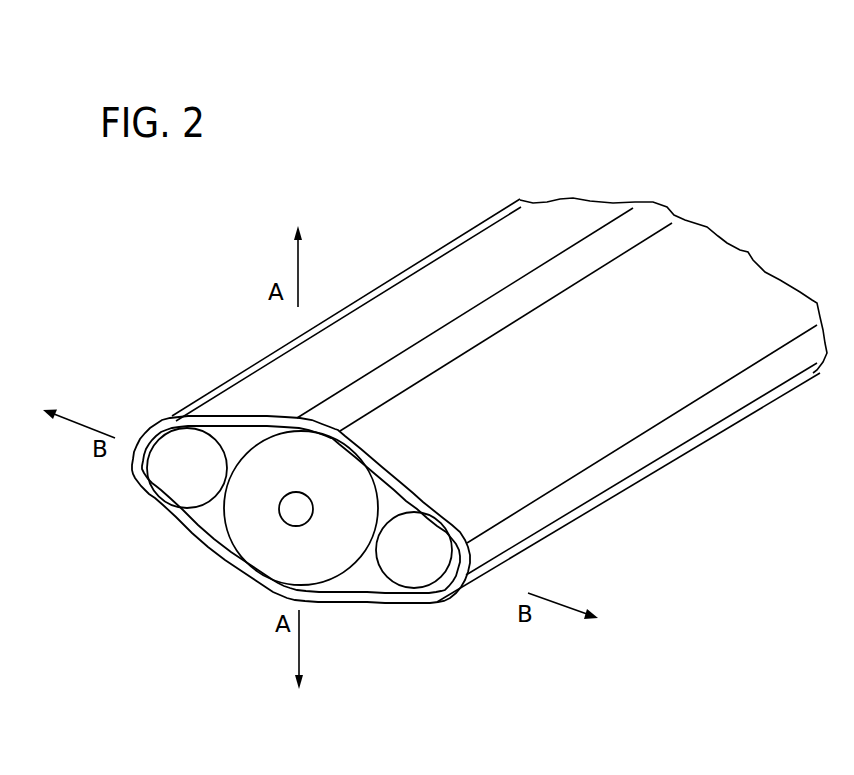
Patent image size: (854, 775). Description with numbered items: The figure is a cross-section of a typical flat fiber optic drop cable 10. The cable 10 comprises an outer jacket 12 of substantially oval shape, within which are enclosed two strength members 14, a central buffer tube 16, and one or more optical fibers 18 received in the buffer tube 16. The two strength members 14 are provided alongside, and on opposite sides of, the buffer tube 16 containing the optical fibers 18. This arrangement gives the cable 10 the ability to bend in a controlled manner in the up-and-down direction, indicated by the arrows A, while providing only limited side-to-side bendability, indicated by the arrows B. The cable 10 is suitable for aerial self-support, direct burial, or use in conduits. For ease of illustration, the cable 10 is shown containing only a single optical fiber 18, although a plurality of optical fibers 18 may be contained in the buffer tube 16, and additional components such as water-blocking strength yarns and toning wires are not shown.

The fiber optic drop cable 10 is at (493, 180).
The outer jacket 12 is at (685, 417).
The strength members 14 is at (190, 450).
The central buffer tube 16 is at (332, 563).
The optical fibers 18 is at (294, 510).